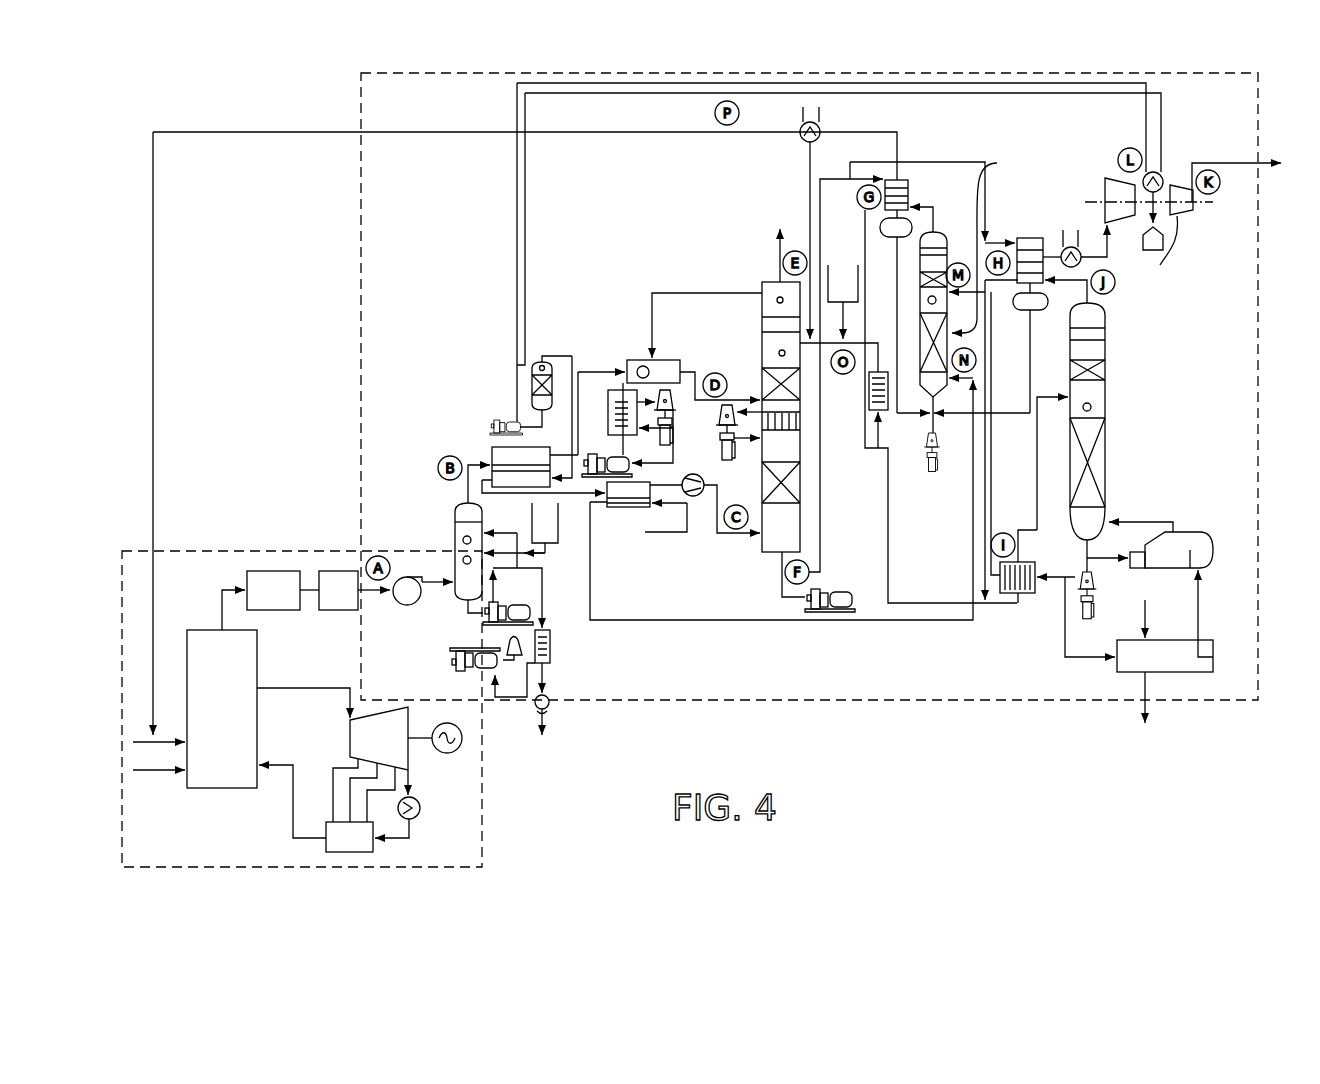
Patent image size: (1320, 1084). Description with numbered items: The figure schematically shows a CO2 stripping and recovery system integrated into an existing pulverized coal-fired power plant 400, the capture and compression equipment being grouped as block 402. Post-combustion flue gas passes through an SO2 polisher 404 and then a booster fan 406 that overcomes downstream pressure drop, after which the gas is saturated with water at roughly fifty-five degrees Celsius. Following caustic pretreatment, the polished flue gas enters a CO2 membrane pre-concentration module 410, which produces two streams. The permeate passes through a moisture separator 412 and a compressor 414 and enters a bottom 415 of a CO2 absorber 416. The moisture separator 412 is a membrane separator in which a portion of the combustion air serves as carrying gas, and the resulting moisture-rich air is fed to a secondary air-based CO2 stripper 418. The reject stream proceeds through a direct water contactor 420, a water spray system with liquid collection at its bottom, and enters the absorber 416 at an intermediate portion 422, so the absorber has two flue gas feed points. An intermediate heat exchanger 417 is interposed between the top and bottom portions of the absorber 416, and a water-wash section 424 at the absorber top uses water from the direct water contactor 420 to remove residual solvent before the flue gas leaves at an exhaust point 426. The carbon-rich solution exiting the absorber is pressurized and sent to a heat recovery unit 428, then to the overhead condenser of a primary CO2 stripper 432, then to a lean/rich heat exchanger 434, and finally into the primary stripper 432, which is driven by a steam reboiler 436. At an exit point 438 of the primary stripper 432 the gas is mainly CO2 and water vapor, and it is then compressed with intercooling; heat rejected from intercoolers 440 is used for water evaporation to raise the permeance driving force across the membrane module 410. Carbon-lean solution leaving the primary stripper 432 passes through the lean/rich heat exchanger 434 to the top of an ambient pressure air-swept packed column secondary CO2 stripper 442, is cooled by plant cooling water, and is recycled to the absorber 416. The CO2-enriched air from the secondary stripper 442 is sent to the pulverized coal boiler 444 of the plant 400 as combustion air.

The power plant 400 is at (313, 870).
The CO2 capture and compression system 402 is at (985, 705).
The SO2 polisher 404 is at (337, 571).
The booster fan 406 is at (410, 605).
The CO2 membrane pre-concentration module 410 is at (490, 452).
The moisture separator 412 is at (640, 507).
The compressor 414 is at (693, 497).
The bottom of CO2 absorber 415 is at (782, 552).
The CO2 absorber 416 is at (805, 450).
The intermediate heat exchanger 417 is at (799, 425).
The secondary air-based CO2 stripper 418 is at (453, 530).
The direct water contactor 420 is at (680, 345).
The intermediate portion of CO2 absorber 422 is at (760, 397).
The water-wash section 424 is at (767, 288).
The exhaust point 426 is at (777, 276).
The heat recovery unit 428 is at (905, 178).
The primary CO2 stripper 432 is at (1114, 449).
The lean/rich heat exchanger 434 is at (1028, 595).
The steam reboiler 436 is at (1197, 532).
The exit point of primary stripper 438 is at (1092, 292).
The intercoolers 440 is at (1123, 224).
The secondary CO2 stripper 442 is at (997, 163).
The pulverized coal boiler 444 is at (218, 790).